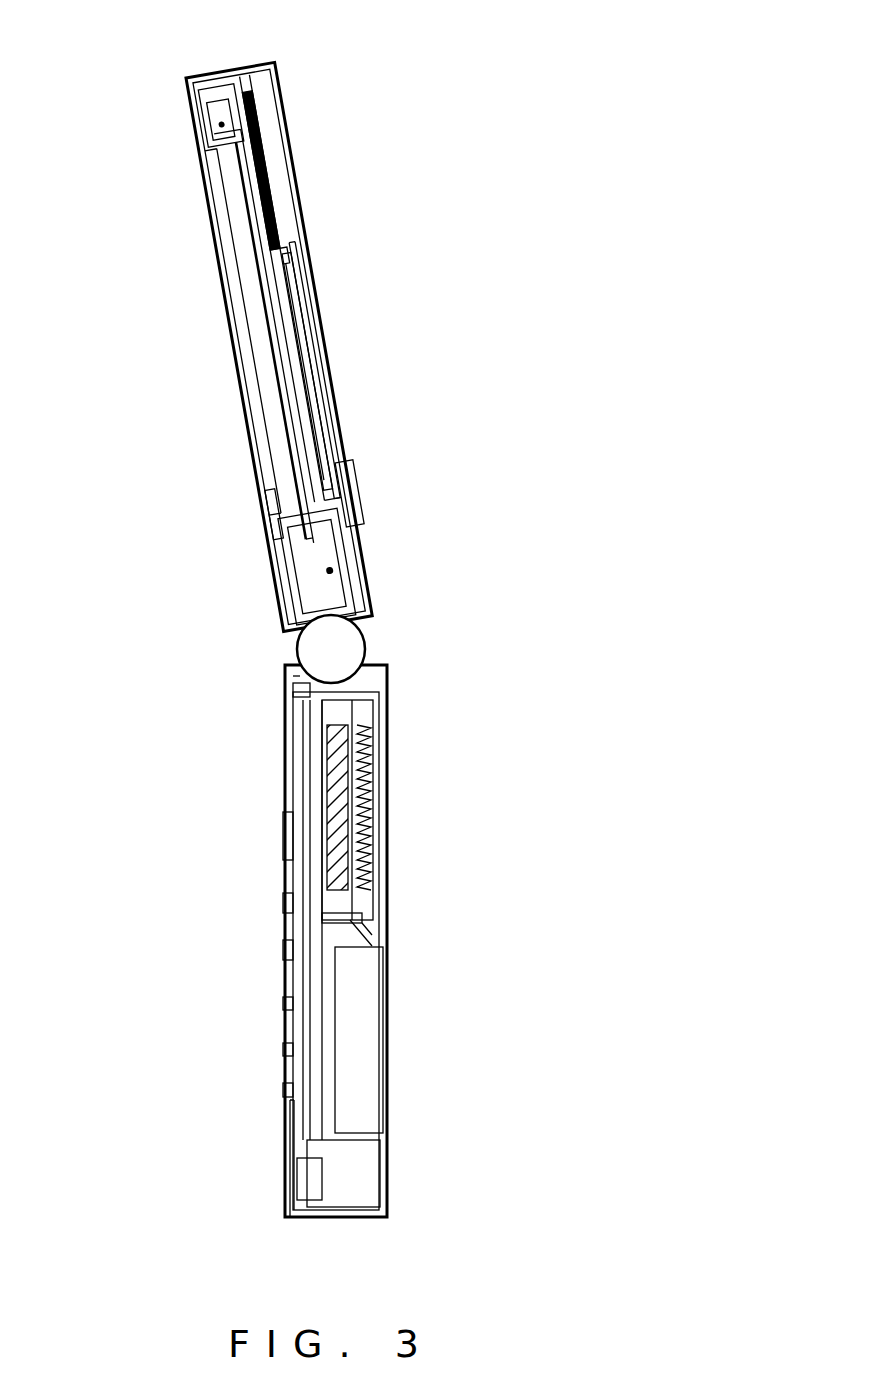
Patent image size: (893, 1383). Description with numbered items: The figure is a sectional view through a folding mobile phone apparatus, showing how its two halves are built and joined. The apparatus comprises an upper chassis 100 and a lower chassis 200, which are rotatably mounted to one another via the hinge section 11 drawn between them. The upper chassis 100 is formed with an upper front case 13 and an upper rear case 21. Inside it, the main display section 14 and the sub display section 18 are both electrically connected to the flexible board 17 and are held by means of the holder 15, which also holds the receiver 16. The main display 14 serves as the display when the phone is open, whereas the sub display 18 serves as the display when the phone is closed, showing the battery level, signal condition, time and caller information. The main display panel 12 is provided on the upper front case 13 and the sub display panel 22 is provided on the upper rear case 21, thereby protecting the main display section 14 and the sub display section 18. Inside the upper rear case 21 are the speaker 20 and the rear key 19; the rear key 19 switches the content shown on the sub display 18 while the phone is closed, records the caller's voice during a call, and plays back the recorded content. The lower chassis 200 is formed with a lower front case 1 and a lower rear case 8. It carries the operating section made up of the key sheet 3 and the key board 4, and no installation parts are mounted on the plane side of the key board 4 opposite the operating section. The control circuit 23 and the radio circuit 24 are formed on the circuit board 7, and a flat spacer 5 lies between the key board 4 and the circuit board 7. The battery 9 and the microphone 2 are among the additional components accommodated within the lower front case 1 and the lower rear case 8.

The upper chassis 100 is at (249, 77).
The lower chassis 200 is at (357, 1218).
The lower front case 1 is at (286, 1132).
The microphone 2 is at (297, 1210).
The key sheet 3 is at (284, 1017).
The key board 4 is at (308, 1152).
The flat spacer 5 is at (303, 690).
The circuit board 7 is at (364, 938).
The lower rear case 8 is at (389, 1177).
The battery 9 is at (389, 1077).
The hinge section 11 is at (455, 624).
The main display panel 12 is at (246, 452).
The upper front case 13 is at (191, 134).
The main display section 14 is at (265, 345).
The holder 15 is at (276, 540).
The receiver 16 is at (222, 126).
The flexible board 17 is at (266, 167).
The sub display section 18 is at (300, 363).
The rear key 19 is at (465, 449).
The speaker 20 is at (332, 572).
The upper rear case 21 is at (303, 203).
The sub display panel 22 is at (324, 303).
The control circuit 23 is at (345, 853).
The radio circuit 24 is at (367, 800).